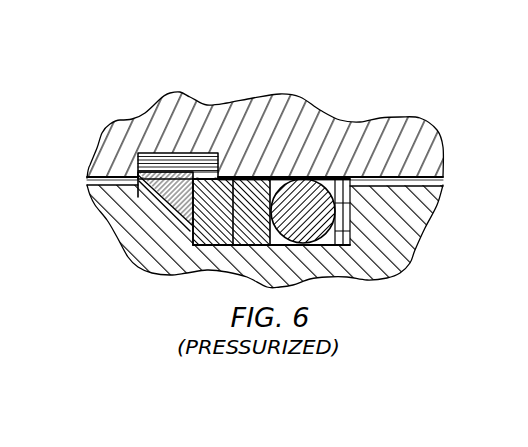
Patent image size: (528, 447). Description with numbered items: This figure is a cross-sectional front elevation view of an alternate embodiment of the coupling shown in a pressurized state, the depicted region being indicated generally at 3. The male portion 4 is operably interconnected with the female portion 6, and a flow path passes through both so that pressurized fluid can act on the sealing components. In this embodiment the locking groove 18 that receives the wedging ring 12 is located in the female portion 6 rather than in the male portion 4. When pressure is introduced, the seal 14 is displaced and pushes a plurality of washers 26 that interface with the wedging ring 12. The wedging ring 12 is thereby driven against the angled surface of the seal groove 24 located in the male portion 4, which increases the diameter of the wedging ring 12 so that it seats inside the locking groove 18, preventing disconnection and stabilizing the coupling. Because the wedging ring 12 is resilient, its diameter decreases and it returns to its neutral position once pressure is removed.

The seal assembly 3 is at (227, 177).
The male portion 4 is at (412, 234).
The female portion 6 is at (383, 128).
The wedging ring 12 is at (170, 194).
The seal 14 is at (290, 190).
The locking groove 18 is at (160, 155).
The seal groove 24 is at (351, 247).
The washers 26 is at (247, 228).